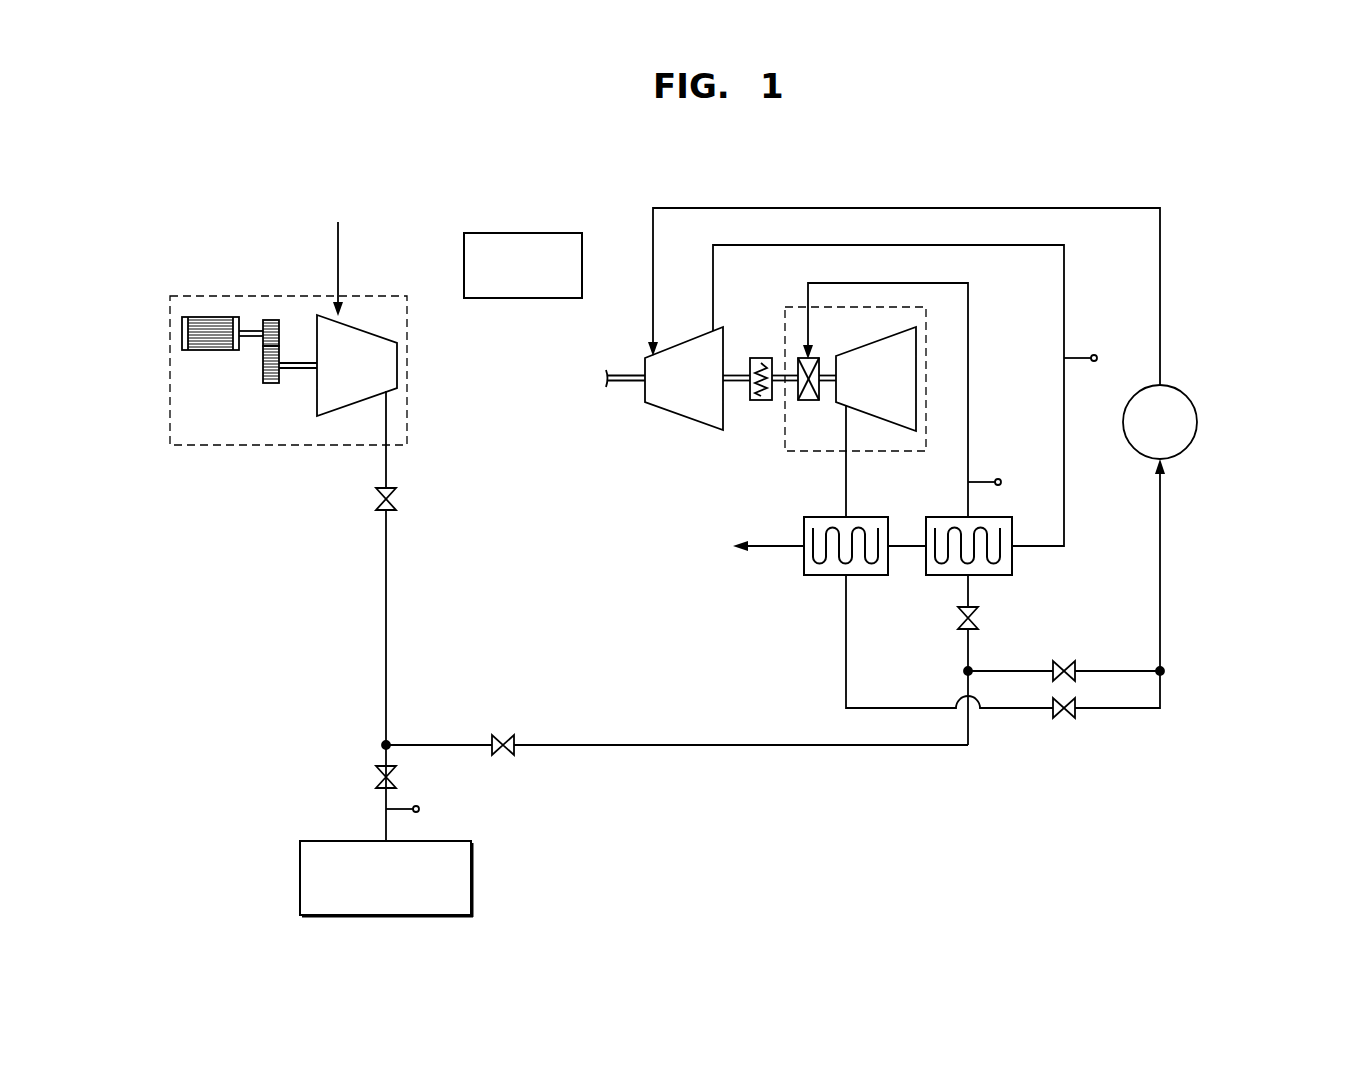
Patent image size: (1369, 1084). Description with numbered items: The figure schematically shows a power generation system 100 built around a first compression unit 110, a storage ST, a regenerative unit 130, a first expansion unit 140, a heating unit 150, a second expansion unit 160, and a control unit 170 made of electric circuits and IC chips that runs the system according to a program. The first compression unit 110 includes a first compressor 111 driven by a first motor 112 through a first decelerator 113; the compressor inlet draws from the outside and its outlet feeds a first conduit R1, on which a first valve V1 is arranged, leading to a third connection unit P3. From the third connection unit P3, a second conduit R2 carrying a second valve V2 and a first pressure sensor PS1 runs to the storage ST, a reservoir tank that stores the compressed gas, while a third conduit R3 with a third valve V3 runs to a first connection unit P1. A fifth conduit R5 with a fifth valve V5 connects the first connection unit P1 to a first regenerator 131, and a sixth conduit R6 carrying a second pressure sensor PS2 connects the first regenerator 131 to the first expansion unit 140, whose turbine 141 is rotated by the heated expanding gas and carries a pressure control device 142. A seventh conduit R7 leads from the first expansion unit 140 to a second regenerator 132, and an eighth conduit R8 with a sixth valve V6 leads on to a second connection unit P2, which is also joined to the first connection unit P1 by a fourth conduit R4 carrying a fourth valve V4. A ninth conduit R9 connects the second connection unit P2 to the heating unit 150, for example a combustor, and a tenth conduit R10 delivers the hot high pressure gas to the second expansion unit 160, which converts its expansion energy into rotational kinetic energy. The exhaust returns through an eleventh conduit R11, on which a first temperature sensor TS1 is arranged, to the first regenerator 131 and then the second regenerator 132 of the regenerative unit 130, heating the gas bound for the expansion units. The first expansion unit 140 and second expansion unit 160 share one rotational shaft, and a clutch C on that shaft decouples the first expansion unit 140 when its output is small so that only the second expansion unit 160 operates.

The power generation system 100 is at (1148, 160).
The first compression unit 110 is at (258, 282).
The first compressor 111 is at (335, 405).
The first motor 112 is at (201, 318).
The first decelerator 113 is at (263, 340).
The regenerative unit 130 is at (736, 583).
The first regenerator 131 is at (930, 577).
The second regenerator 132 is at (802, 572).
The first expansion unit 140 is at (790, 307).
The turbine 141 is at (880, 340).
The pressure control device 142 is at (810, 402).
The heating unit 150 is at (1196, 392).
The second expansion unit 160 is at (690, 340).
The control unit 170 is at (521, 233).
The clutch C is at (774, 394).
The storage ST is at (386, 879).
The first valve V1 is at (403, 499).
The second valve V2 is at (402, 777).
The third valve V3 is at (503, 730).
The fourth valve V4 is at (1064, 657).
The fifth valve V5 is at (952, 618).
The sixth valve V6 is at (1064, 722).
The first conduit R1 is at (386, 597).
The second conduit R2 is at (386, 825).
The third conduit R3 is at (621, 745).
The fourth conduit R4 is at (1110, 668).
The fifth conduit R5 is at (968, 655).
The sixth conduit R6 is at (968, 413).
The seventh conduit R7 is at (846, 482).
The eighth conduit R8 is at (846, 668).
The ninth conduit R9 is at (1160, 570).
The tenth conduit R10 is at (1160, 270).
The eleventh conduit R11 is at (1064, 278).
The first connection unit P1 is at (951, 671).
The second connection unit P2 is at (1176, 671).
The third connection unit P3 is at (370, 745).
The first pressure sensor PS1 is at (425, 809).
The second pressure sensor PS2 is at (995, 468).
The first temperature sensor TS1 is at (1089, 343).